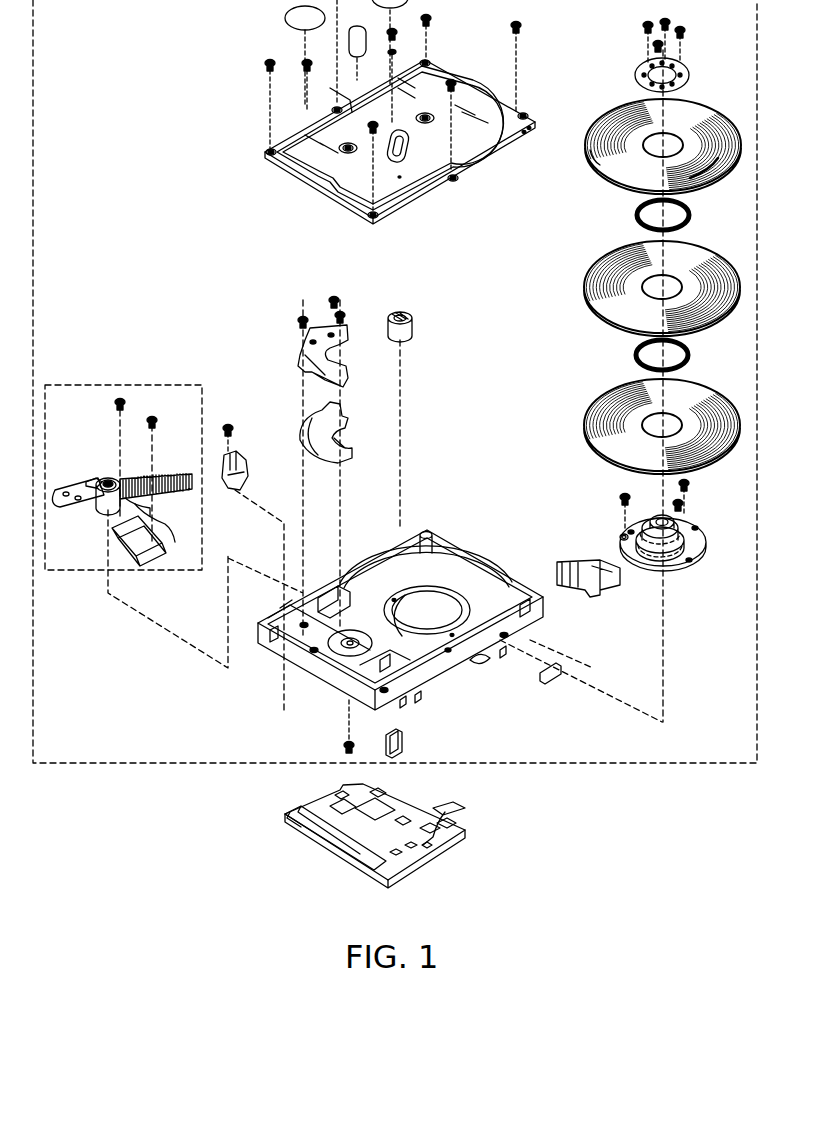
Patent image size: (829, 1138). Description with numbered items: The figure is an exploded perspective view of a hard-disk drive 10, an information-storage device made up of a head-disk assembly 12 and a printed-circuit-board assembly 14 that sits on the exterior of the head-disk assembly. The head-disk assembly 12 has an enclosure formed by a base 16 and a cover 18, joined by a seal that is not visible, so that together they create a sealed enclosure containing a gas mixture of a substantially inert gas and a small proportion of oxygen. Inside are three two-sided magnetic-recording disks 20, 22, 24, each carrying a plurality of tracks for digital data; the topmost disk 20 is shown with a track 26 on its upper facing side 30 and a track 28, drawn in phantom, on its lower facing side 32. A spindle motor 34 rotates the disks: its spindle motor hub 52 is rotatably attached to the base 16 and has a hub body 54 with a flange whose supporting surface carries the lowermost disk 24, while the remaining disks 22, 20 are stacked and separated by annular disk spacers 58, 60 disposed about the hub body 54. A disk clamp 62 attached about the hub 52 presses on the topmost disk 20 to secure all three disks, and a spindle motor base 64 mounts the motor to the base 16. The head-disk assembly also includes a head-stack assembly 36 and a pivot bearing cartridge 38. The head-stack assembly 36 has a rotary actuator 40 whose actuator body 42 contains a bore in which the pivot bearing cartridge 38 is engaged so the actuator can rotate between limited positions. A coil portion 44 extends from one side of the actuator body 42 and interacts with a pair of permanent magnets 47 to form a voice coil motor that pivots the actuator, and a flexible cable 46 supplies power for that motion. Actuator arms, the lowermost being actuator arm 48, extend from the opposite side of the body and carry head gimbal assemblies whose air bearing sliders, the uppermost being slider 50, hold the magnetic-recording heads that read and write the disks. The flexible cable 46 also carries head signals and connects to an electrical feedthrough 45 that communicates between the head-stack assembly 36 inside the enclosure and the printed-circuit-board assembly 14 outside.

The hard-disk drive 10 is at (617, 780).
The head-disk assembly 12 is at (530, 765).
The printed-circuit-board assembly 14 is at (422, 862).
The base 16 is at (440, 688).
The cover 18 is at (502, 140).
The magnetic-recording disk 20 is at (608, 115).
The magnetic-recording disk 22 is at (608, 258).
The magnetic-recording disk 24 is at (606, 396).
The track 26 is at (712, 170).
The track 28 is at (590, 153).
The upper facing side 30 is at (712, 108).
The lower facing side 32 is at (698, 192).
The spindle motor 34 is at (645, 547).
The head-stack assembly 36 is at (123, 461).
The pivot bearing cartridge 38 is at (110, 478).
The rotary actuator 40 is at (104, 480).
The actuator body 42 is at (88, 482).
The coil portion 44 is at (68, 512).
The electrical feedthrough 45 is at (150, 553).
The flexible cable 46 is at (165, 528).
The permanent magnets 47 is at (300, 352).
The actuator arm 48 is at (150, 510).
The air bearing slider 50 is at (186, 476).
The spindle motor hub 52 is at (660, 557).
The hub body 54 is at (612, 522).
The annular disk spacer 58 is at (636, 216).
The annular disk spacer 60 is at (636, 356).
The disk clamp 62 is at (642, 68).
The spindle motor base 64 is at (698, 532).